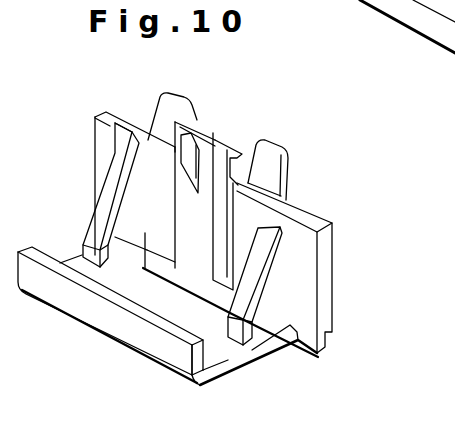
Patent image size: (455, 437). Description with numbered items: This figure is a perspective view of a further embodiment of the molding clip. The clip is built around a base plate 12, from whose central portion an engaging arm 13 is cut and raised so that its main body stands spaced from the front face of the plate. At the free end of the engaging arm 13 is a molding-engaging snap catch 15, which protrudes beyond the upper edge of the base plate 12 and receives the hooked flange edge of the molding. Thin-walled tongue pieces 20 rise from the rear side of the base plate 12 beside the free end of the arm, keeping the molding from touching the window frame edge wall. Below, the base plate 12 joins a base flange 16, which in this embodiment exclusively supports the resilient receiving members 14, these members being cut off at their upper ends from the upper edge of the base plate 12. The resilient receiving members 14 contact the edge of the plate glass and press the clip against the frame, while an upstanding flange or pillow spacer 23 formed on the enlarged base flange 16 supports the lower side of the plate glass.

The base plate 12 is at (108, 116).
The engaging arm 13 is at (178, 218).
The resilient receiving members 14 is at (107, 198).
The molding-engaging snap catch 15 is at (237, 150).
The base flange 16 is at (213, 357).
The thin-walled tongue pieces 20 is at (270, 150).
The upstanding flange or pillow spacer 23 is at (43, 262).